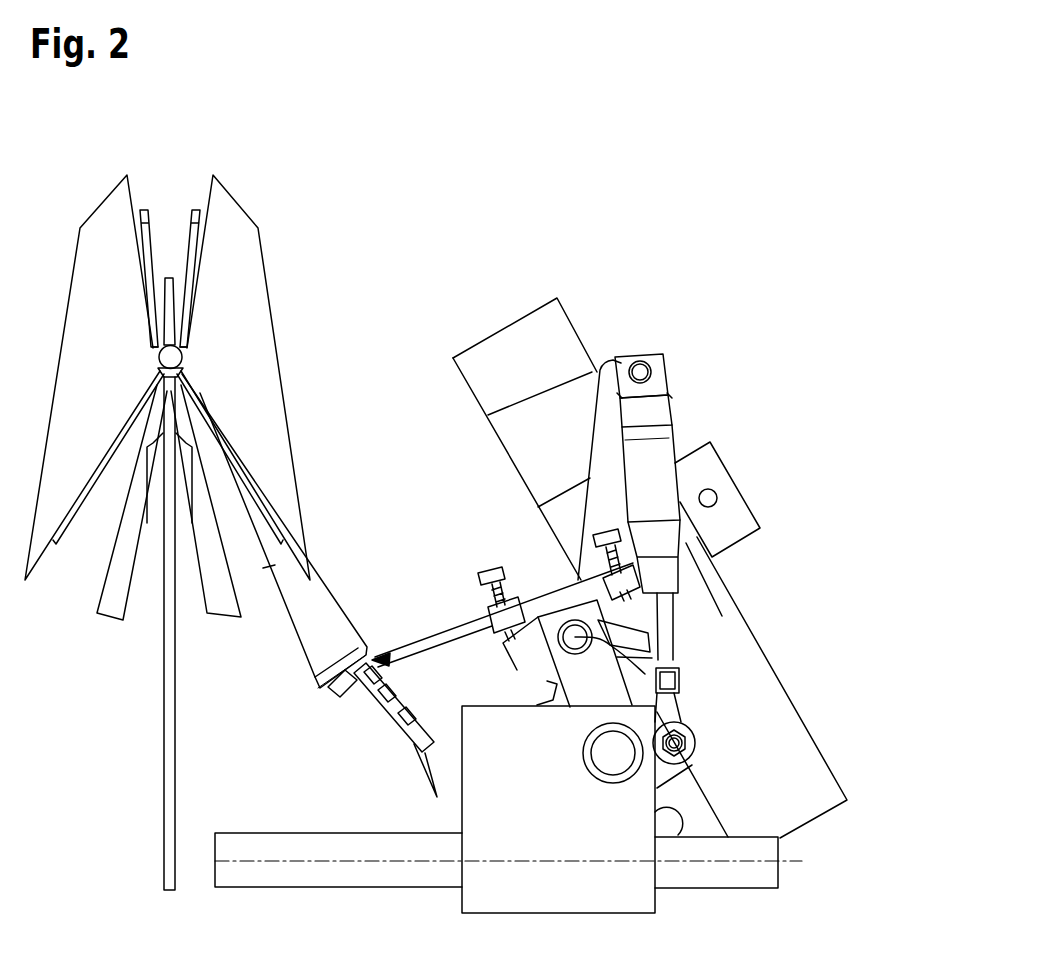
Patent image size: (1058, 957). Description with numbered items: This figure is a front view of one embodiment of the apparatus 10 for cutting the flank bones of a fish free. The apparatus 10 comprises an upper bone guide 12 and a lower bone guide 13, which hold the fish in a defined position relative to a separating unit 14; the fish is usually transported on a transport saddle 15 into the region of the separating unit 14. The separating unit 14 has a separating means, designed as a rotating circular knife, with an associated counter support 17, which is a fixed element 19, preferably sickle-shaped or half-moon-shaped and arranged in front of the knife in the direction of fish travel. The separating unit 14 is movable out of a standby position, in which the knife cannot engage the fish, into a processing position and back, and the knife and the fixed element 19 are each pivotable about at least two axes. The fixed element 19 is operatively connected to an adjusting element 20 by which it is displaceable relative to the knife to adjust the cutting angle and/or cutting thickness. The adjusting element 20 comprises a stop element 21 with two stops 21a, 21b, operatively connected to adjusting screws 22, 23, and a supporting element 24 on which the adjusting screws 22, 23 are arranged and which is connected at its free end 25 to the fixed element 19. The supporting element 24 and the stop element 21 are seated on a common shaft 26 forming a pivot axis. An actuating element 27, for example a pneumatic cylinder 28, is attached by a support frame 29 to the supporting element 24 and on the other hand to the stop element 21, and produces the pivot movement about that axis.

The apparatus 10 is at (795, 367).
The upper bone guide 12 is at (188, 242).
The lower bone guide 13 is at (115, 577).
The separating unit 14 is at (690, 411).
The transport saddle 15 is at (165, 678).
The counter support 17 is at (290, 661).
The fixed element 19 is at (330, 630).
The adjusting element 20 is at (538, 583).
The stop element 21 is at (585, 687).
The stop 21a is at (392, 709).
The stop 21b is at (637, 633).
The adjusting screw 22 is at (483, 593).
The adjusting screw 23 is at (590, 550).
The supporting element 24 is at (391, 715).
The free end 25 is at (347, 681).
The common shaft 26 is at (679, 683).
The actuating element 27 is at (663, 452).
The pneumatic cylinder 28 is at (633, 447).
The support frame 29 is at (603, 475).